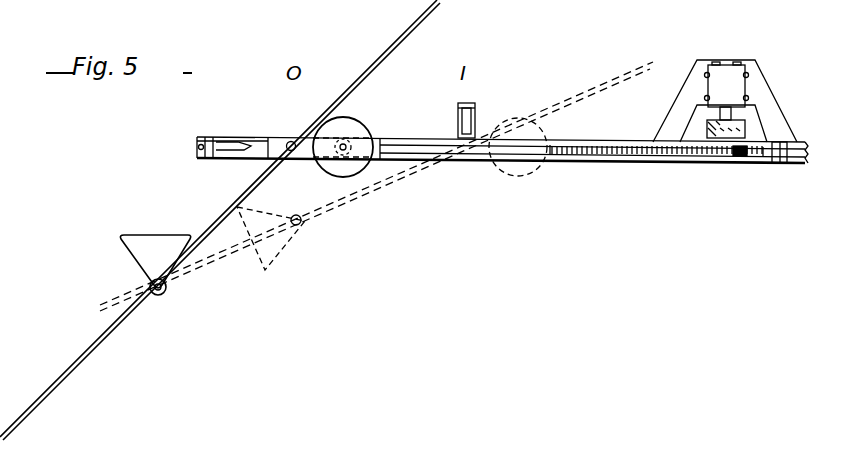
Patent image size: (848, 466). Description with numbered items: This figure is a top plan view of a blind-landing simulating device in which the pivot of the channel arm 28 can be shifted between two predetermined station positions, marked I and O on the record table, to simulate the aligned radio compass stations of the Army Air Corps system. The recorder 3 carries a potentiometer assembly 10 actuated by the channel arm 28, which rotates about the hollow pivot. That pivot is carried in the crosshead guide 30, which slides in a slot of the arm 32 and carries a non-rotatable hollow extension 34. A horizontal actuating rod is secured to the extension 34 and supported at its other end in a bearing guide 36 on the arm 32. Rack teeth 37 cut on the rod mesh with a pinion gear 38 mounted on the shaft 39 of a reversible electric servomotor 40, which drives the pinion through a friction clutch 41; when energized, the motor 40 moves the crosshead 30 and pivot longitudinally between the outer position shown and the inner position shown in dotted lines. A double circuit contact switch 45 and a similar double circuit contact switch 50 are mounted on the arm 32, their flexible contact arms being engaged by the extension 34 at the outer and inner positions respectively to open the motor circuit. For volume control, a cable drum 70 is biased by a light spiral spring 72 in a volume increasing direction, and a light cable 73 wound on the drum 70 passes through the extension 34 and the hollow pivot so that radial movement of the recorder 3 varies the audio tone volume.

The recorder 3 is at (142, 236).
The potentiometer assembly 10 is at (166, 290).
The channel arm 28 is at (548, 108).
The crosshead guide 30 is at (376, 140).
The arm 32 is at (572, 143).
The hollow extension 34 is at (288, 143).
The bearing guide 36 is at (776, 164).
The rack teeth 37 is at (603, 160).
The pinion gear 38 is at (736, 160).
The shaft 39 is at (731, 113).
The reversible electric servomotor 40 is at (737, 72).
The friction clutch 41 is at (746, 128).
The double circuit contact switch 45 is at (218, 148).
The double circuit contact switch 50 is at (478, 108).
The cable drum 70 is at (356, 128).
The spiral spring 72 is at (345, 130).
The cable 73 is at (310, 160).